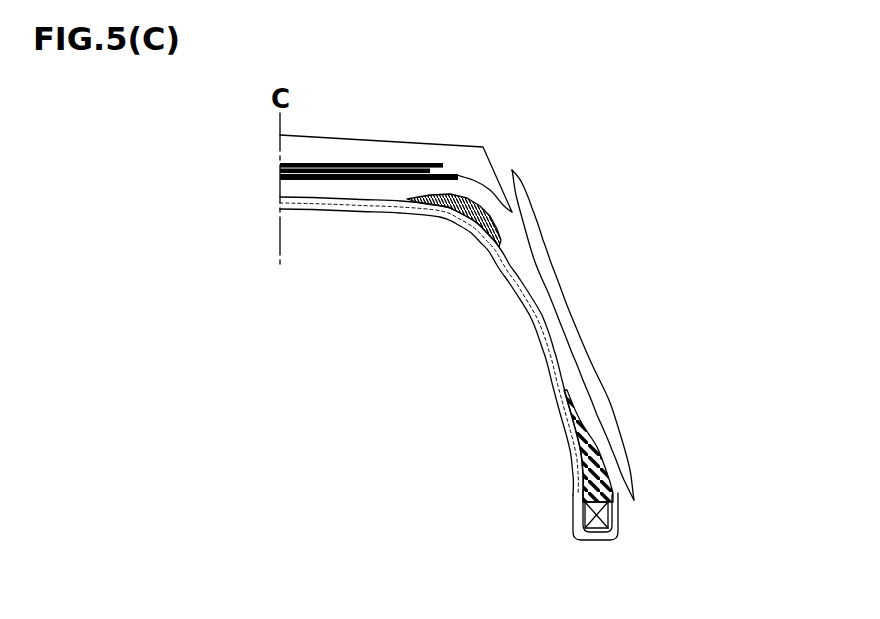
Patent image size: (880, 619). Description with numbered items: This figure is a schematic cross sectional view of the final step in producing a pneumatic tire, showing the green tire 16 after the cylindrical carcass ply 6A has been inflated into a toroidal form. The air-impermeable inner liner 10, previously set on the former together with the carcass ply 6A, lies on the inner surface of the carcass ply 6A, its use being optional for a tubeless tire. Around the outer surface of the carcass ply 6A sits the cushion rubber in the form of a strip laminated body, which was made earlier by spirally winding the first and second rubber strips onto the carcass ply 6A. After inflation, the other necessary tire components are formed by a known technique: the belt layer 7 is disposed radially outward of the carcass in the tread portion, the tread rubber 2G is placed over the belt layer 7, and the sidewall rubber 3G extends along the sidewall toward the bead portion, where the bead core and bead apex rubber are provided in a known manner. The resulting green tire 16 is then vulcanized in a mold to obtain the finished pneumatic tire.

The tread rubber 2G is at (499, 119).
The green tire 16 is at (558, 154).
The belt layer 7 is at (261, 182).
The sidewall rubber 3G is at (575, 333).
The inner liner 10 is at (348, 210).
The carcass ply 6A is at (537, 343).